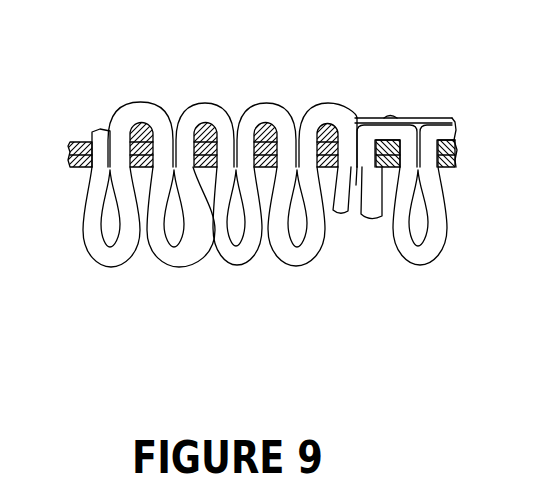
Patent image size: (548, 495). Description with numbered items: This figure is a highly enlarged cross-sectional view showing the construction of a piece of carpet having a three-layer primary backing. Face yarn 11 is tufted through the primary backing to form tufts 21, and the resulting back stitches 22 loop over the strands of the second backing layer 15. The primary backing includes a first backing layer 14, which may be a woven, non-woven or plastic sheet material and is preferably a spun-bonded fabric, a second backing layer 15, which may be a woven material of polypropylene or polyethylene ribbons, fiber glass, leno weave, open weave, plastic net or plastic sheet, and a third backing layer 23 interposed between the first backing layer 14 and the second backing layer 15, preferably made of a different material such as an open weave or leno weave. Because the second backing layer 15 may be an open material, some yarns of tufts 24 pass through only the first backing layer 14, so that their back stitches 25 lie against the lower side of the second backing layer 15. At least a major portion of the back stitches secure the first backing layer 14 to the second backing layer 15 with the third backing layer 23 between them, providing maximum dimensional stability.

The face yarn 11 is at (288, 185).
The first backing layer 14 is at (84, 168).
The second backing layer 15 is at (264, 122).
The tufts 21 is at (163, 255).
The back stitches 22 is at (195, 118).
The third backing layer 23 is at (130, 146).
The tufts 24 is at (427, 257).
The back stitches 25 is at (433, 133).